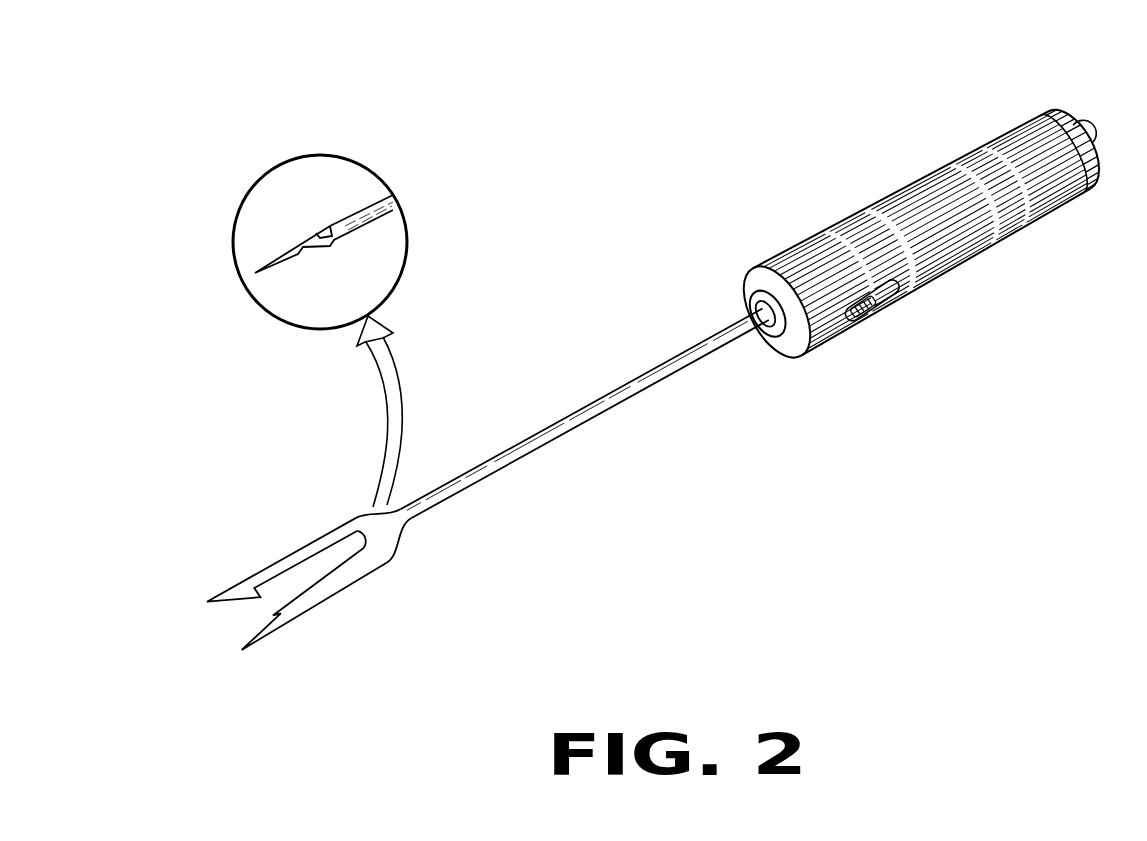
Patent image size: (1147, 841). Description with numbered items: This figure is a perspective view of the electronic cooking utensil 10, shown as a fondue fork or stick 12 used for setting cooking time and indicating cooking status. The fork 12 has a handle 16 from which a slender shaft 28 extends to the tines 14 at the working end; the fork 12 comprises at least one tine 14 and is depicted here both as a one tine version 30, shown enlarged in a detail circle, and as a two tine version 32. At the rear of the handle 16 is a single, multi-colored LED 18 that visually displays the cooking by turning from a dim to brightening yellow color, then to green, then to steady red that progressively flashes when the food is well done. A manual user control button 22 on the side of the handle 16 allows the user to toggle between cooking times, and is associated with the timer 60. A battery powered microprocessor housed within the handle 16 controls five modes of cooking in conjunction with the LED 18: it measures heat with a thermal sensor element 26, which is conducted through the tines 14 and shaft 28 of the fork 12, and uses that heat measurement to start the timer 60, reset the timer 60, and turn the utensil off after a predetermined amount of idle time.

The electronic cooking utensil for setting cooking time with status indicator 10 is at (505, 119).
The fondue fork/stick 12 is at (742, 320).
The tine/skewer 14 is at (318, 242).
The handle 16 is at (833, 338).
The LED 18 is at (1086, 121).
The manual user control 22 is at (866, 292).
The timer 60 is at (872, 300).
The thermal sensor element 26 is at (603, 415).
The shaft 28 is at (488, 460).
The single tine version 30 is at (317, 236).
The double tine version 32 is at (386, 561).